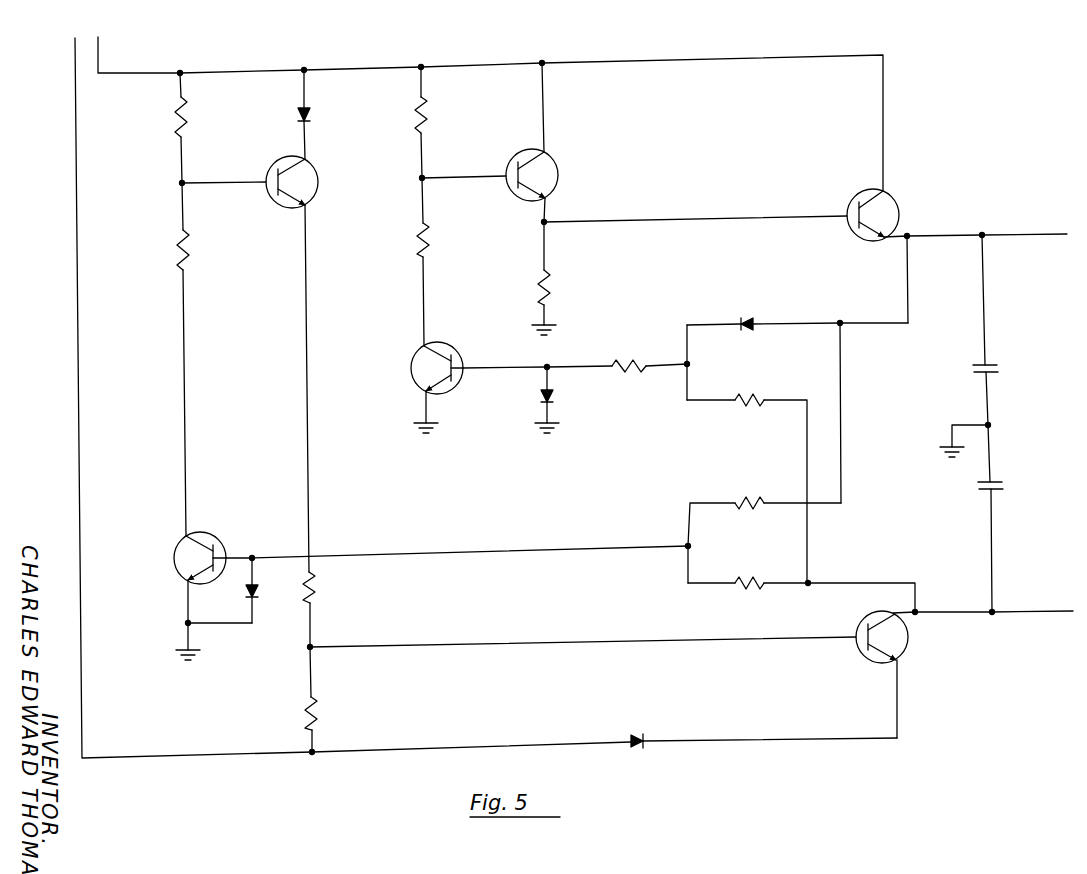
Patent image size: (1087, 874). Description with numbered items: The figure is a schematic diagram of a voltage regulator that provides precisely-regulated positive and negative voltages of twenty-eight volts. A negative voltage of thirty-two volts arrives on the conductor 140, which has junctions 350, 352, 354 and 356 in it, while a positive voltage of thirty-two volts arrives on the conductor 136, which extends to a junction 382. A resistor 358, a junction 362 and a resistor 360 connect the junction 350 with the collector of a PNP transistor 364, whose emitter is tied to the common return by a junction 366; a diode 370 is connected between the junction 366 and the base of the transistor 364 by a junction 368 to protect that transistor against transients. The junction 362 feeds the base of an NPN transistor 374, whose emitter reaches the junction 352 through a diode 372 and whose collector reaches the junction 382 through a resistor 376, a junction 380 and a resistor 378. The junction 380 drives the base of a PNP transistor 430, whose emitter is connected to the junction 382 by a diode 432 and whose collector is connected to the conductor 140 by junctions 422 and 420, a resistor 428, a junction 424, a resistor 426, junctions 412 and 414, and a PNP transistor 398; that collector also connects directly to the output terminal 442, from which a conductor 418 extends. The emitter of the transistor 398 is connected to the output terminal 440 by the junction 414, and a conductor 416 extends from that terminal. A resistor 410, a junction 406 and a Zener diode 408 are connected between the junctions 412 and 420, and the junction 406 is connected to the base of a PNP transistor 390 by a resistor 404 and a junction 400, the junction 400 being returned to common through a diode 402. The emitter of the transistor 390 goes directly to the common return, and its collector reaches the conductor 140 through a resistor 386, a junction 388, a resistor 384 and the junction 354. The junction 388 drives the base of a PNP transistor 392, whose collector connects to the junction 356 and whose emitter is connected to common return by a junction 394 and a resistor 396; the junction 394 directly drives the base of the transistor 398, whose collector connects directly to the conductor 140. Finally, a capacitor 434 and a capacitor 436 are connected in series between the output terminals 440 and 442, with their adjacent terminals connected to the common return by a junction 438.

The conductor 136 is at (76, 73).
The conductor 140 is at (100, 50).
The junction 350 is at (182, 72).
The junction 352 is at (306, 69).
The junction 354 is at (423, 66).
The junction 356 is at (544, 62).
The resistor 358 is at (176, 121).
The resistor 360 is at (178, 252).
The junction 362 is at (179, 184).
The PNP transistor 364 is at (176, 568).
The junction 366 is at (185, 625).
The junction 368 is at (253, 556).
The diode 370 is at (256, 598).
The diode 372 is at (308, 114).
The NPN transistor 374 is at (312, 170).
The resistor 376 is at (316, 590).
The resistor 378 is at (318, 704).
The junction 380 is at (313, 645).
The junction 382 is at (314, 755).
The resistor 384 is at (428, 113).
The resistor 386 is at (430, 242).
The junction 388 is at (420, 182).
The PNP transistor 390 is at (414, 380).
The PNP transistor 392 is at (553, 165).
The junction 394 is at (548, 221).
The resistor 396 is at (552, 283).
The PNP transistor 398 is at (890, 197).
The junction 400 is at (545, 370).
The diode 402 is at (555, 398).
The resistor 404 is at (624, 362).
The junction 406 is at (686, 368).
The Zener diode 408 is at (748, 320).
The resistor 410 is at (738, 398).
The junction 412 is at (842, 326).
The junction 414 is at (909, 238).
The conductor 416 is at (1048, 218).
The conductor 418 is at (1065, 613).
The junction 420 is at (810, 581).
The junction 422 is at (917, 610).
The junction 424 is at (685, 550).
The resistor 426 is at (738, 501).
The resistor 428 is at (738, 590).
The PNP transistor 430 is at (884, 664).
The diode 432 is at (646, 737).
The capacitor 434 is at (990, 368).
The capacitor 436 is at (994, 488).
The junction 438 is at (990, 424).
The output terminal 440 is at (984, 238).
The output terminal 442 is at (993, 610).